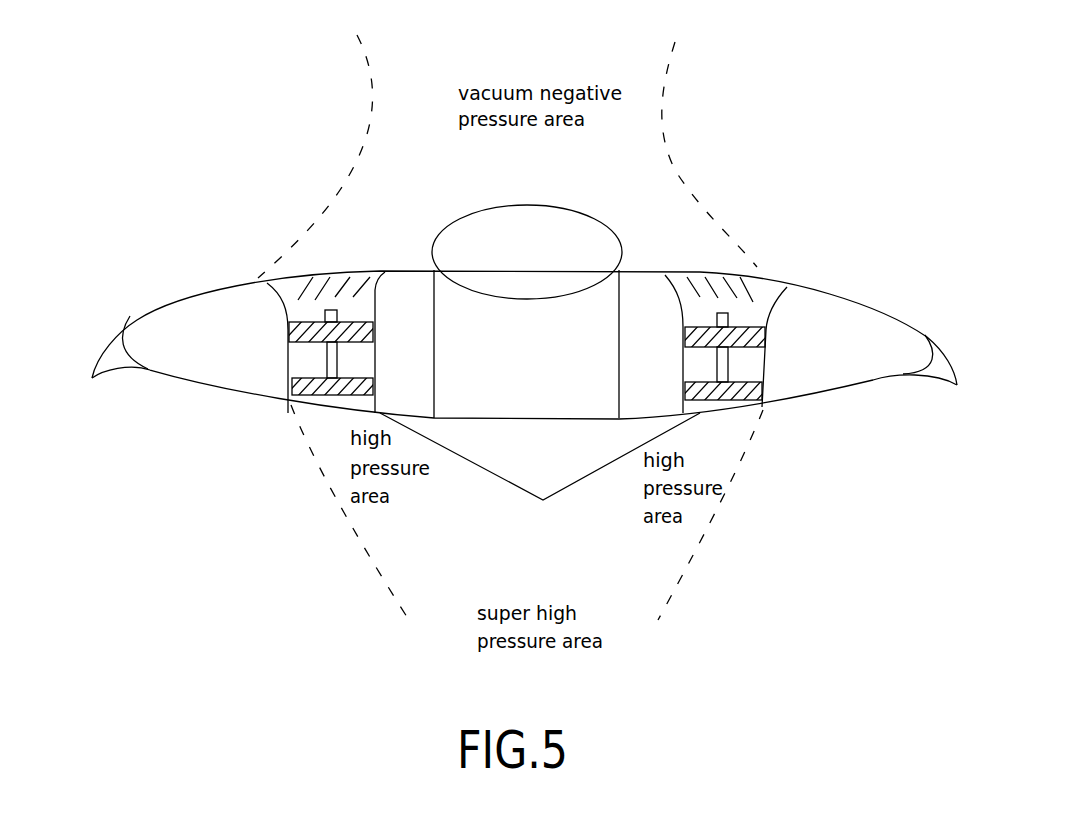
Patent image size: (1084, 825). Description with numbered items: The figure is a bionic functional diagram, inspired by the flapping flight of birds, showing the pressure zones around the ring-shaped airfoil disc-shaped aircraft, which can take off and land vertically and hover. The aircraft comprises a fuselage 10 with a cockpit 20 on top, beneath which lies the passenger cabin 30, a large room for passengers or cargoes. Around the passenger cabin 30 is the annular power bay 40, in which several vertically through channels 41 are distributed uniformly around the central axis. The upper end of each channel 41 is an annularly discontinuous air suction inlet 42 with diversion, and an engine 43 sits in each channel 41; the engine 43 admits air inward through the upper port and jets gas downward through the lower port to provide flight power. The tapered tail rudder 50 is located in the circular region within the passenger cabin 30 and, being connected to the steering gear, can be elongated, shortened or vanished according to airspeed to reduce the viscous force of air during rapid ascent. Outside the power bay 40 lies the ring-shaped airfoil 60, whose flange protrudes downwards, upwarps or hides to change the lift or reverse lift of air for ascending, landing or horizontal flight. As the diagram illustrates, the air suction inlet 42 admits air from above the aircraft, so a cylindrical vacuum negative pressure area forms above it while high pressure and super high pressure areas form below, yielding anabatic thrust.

The fuselage 10 is at (177, 303).
The cockpit 20 is at (468, 217).
The passenger cabin 30 is at (442, 290).
The power bay 40 is at (530, 317).
The channel 41 is at (298, 365).
The air suction inlet 42 is at (327, 277).
The engine 43 is at (755, 327).
The tapered tail rudder 50 is at (513, 493).
The ring-shaped airfoil 60 is at (107, 380).